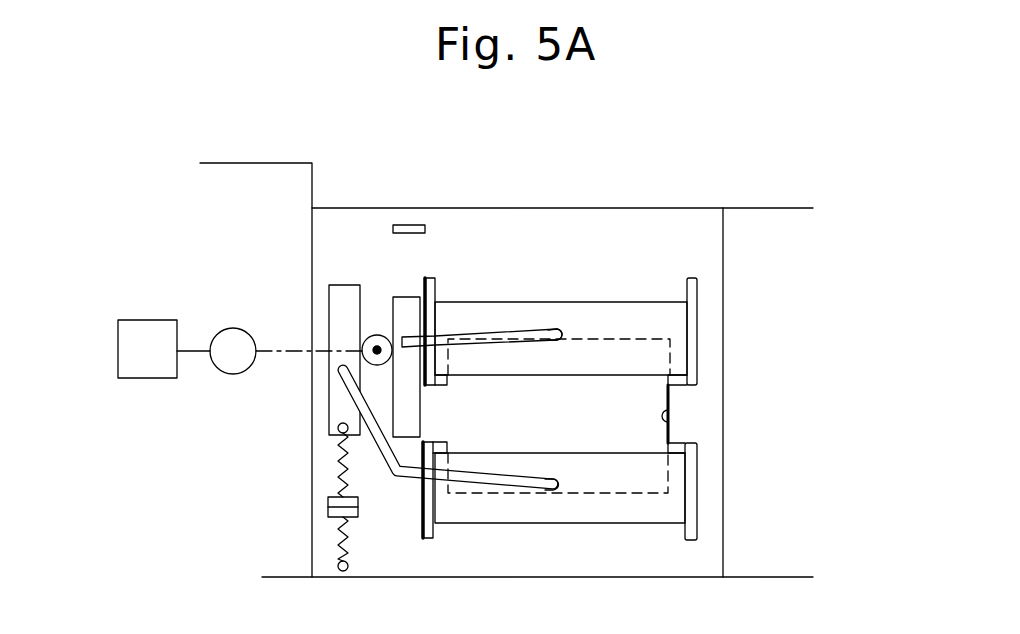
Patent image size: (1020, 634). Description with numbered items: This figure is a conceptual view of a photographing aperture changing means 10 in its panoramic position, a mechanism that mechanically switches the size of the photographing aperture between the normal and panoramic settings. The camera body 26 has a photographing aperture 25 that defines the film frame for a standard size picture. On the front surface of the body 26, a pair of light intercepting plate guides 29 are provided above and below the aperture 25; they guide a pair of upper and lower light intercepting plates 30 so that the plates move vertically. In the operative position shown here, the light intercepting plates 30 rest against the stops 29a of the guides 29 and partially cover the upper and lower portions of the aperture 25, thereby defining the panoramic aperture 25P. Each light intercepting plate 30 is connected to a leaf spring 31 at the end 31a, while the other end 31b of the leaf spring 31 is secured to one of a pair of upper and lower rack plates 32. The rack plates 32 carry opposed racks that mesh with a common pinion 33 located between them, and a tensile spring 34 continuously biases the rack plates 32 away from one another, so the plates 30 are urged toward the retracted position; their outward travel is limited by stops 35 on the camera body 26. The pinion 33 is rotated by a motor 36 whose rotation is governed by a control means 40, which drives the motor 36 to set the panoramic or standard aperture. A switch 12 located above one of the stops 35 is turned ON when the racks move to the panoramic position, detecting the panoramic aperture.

The photographing aperture changing means 10 is at (808, 165).
The switch 12 is at (328, 498).
The photographing aperture 25 is at (668, 420).
The panoramic aperture 25P is at (577, 383).
The camera body 26 is at (542, 222).
The light intercepting plate guides 29 is at (432, 282).
The stops 29a is at (448, 380).
The light intercepting plates 30 is at (640, 308).
The leaf springs 31 is at (508, 330).
The ends of leaf springs 31a is at (555, 328).
The ends of leaf springs 31b is at (402, 338).
The rack plates 32 is at (408, 300).
The pinion 33 is at (364, 342).
The tensile spring 34 is at (350, 525).
The stops 35 is at (415, 225).
The motor 36 is at (227, 328).
The control means 40 is at (152, 380).